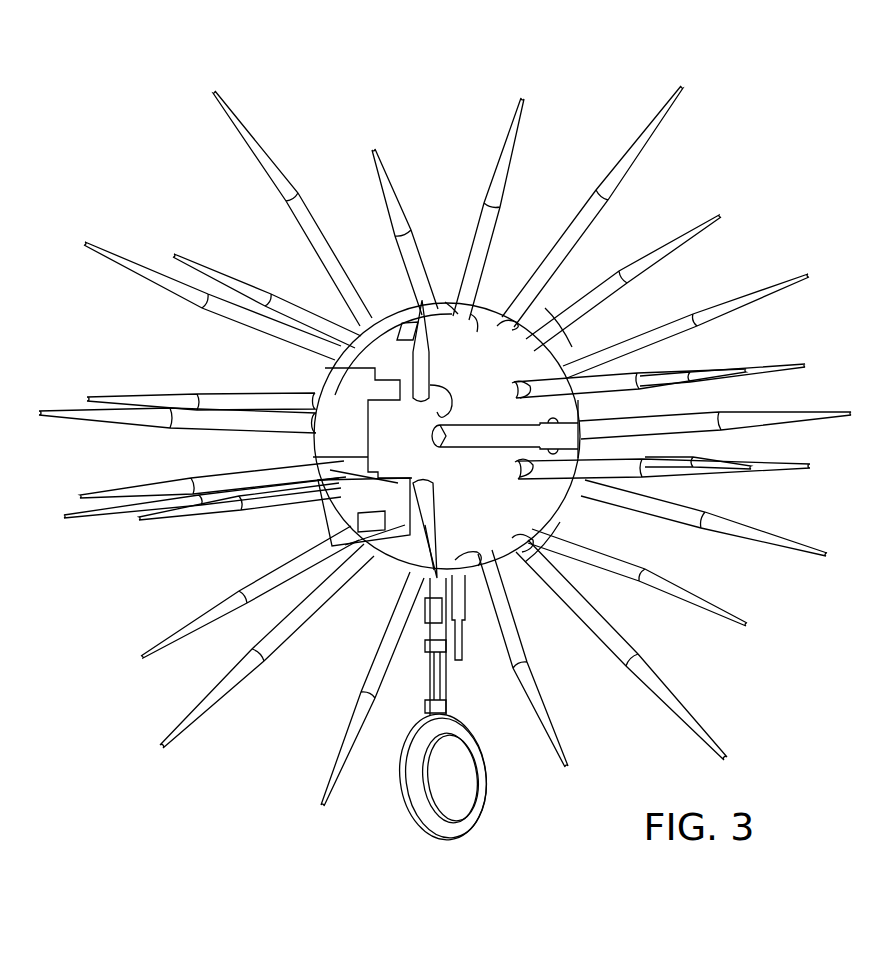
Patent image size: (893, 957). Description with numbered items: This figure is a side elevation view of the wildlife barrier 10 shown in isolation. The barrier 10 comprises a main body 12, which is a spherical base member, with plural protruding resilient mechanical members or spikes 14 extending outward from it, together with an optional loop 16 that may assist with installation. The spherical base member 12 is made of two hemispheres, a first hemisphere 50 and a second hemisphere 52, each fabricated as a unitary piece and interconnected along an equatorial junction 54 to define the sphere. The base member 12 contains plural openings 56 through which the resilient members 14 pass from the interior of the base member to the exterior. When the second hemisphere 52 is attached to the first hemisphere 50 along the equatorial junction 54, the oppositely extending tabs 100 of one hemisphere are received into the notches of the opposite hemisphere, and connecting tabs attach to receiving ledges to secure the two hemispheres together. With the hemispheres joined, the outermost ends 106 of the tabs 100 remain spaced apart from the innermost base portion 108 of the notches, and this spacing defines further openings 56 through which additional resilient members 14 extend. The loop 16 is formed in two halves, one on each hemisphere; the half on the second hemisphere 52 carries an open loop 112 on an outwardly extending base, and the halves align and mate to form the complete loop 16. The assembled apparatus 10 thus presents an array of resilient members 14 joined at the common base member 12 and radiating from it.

The wildlife barrier 10 is at (602, 101).
The main body 12 is at (500, 315).
The resilient members 14 is at (263, 144).
The loop 16 is at (478, 835).
The first hemisphere 50 is at (565, 508).
The second hemisphere 52 is at (325, 388).
The equatorial junction 54 is at (442, 290).
The openings 56 is at (533, 320).
The tabs 100 is at (432, 382).
The outermost ends 106 is at (390, 405).
The innermost base portion 108 is at (432, 392).
The open loop 112 is at (447, 672).